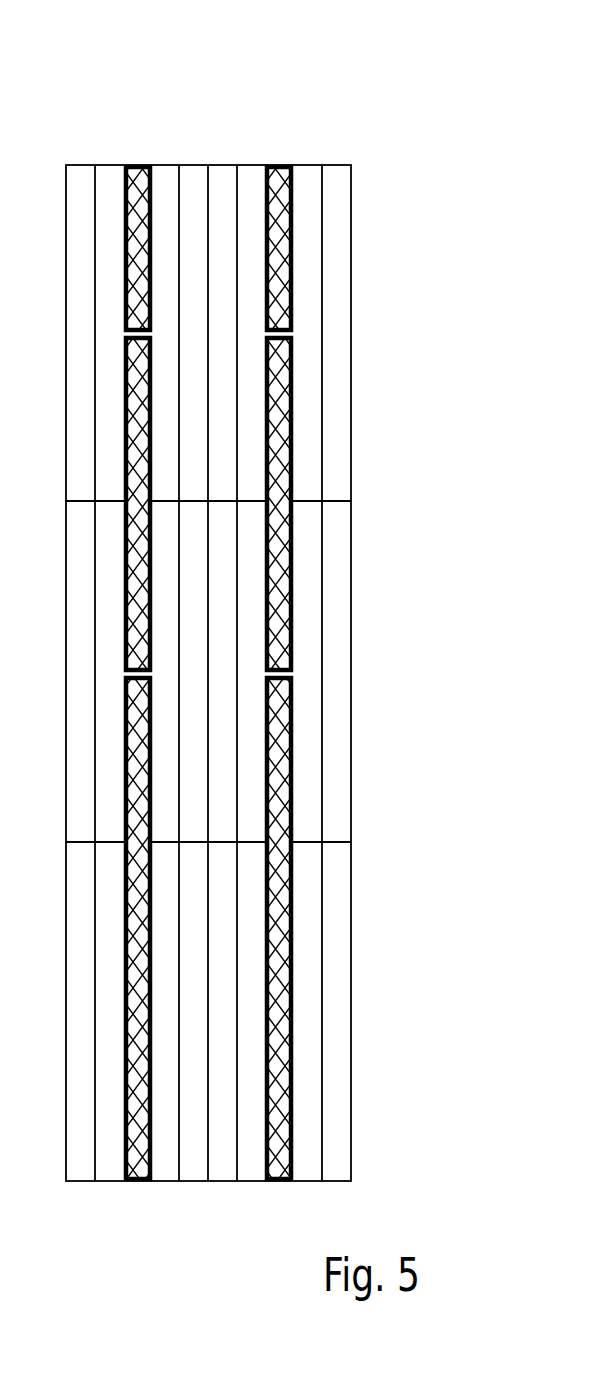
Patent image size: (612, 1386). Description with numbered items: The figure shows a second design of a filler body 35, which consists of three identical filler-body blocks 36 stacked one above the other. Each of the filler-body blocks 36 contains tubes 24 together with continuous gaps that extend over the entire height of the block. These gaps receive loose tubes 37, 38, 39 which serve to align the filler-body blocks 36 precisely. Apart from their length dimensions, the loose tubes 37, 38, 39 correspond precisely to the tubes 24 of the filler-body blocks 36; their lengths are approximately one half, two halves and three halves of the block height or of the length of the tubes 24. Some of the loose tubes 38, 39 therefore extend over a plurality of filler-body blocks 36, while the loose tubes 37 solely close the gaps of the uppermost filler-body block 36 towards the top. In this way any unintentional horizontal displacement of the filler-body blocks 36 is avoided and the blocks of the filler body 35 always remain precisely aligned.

The filler body 35 is at (240, 132).
The tubes 24 is at (330, 217).
The filler-body blocks 36 is at (372, 348).
The loose tubes 37 is at (133, 270).
The loose tubes 38 is at (135, 463).
The loose tubes 39 is at (133, 888).